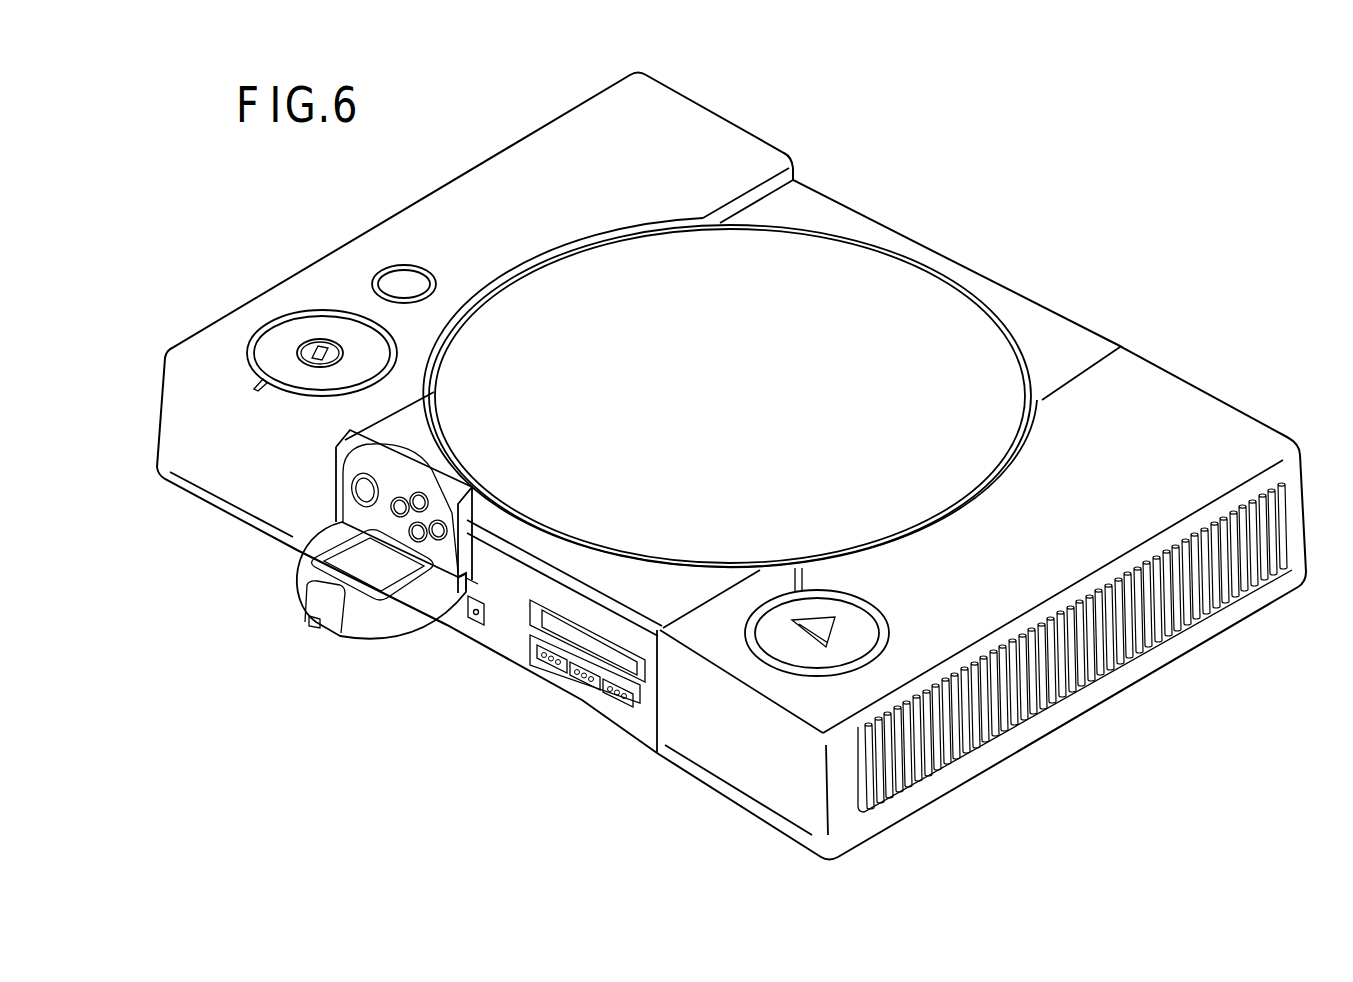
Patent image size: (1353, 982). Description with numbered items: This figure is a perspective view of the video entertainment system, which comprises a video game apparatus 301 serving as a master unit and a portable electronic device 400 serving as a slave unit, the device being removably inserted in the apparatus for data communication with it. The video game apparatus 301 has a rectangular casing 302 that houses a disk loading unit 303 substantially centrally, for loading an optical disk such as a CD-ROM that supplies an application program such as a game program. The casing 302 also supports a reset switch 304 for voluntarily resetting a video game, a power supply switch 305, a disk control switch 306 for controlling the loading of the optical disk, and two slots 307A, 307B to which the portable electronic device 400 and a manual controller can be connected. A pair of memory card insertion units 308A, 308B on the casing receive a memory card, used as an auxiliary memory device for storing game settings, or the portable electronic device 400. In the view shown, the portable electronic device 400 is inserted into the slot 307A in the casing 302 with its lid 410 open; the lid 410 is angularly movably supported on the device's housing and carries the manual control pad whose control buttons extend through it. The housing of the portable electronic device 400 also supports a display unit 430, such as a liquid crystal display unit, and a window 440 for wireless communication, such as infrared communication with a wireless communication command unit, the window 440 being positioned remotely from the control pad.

The video game apparatus 301 is at (936, 220).
The rectangular casing 302 is at (1198, 443).
The disk loading unit 303 is at (598, 296).
The reset switch 304 is at (399, 290).
The power supply switch 305 is at (290, 352).
The disk control switch 306 is at (862, 640).
The slot 307A is at (476, 572).
The slot 307B is at (592, 645).
The memory card insertion unit 308A is at (480, 619).
The memory card insertion unit 308B is at (548, 612).
The portable electronic device 400 is at (311, 577).
The lid 410 is at (335, 468).
The display unit 430 is at (367, 573).
The window 440 is at (301, 632).